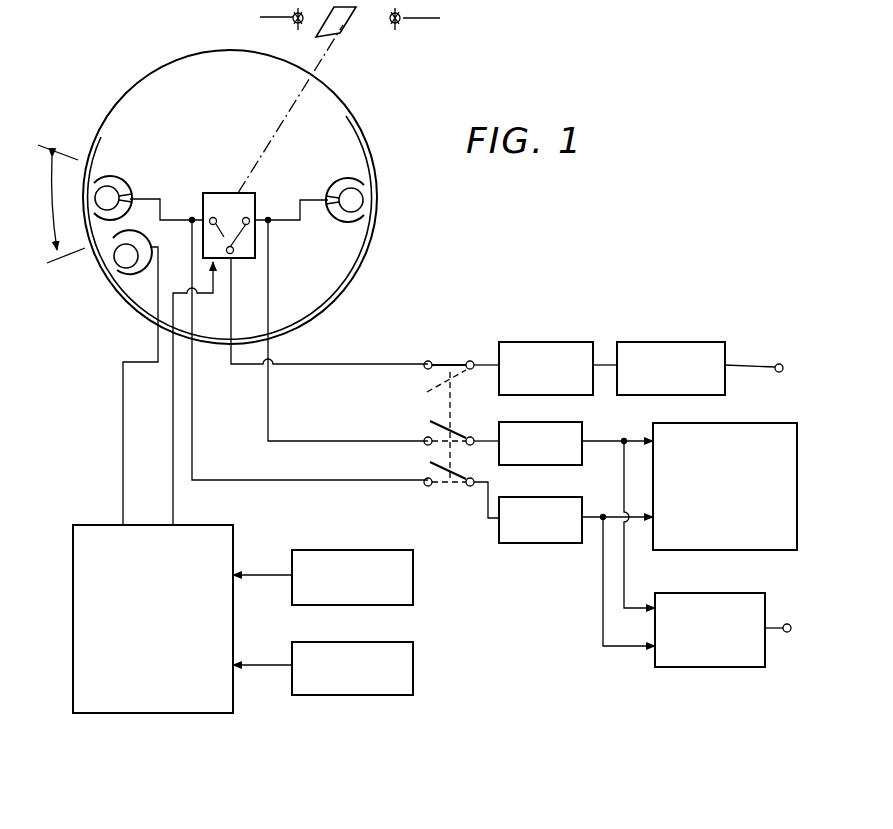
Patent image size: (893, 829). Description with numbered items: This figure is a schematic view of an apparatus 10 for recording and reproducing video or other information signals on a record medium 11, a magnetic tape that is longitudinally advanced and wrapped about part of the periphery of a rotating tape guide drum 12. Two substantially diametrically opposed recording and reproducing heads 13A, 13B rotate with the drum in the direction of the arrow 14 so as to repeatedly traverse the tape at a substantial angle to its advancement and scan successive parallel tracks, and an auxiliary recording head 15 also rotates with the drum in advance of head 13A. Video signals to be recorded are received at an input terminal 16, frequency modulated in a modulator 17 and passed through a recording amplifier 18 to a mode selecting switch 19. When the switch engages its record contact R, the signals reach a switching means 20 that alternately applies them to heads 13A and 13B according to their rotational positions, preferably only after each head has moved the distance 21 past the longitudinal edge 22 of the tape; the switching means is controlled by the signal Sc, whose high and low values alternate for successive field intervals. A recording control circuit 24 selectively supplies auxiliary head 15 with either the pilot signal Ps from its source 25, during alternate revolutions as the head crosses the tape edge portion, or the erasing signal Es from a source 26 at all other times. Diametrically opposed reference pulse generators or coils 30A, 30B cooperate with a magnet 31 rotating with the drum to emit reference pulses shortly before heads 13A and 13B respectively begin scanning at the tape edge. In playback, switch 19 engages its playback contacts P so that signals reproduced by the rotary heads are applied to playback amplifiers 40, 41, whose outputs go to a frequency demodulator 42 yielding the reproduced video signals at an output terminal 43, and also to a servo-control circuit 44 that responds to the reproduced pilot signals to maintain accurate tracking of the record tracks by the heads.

The apparatus 10 is at (380, 247).
The record medium 11 is at (337, 303).
The tape guide drum 12 is at (340, 117).
The recording and reproducing head 13A is at (118, 177).
The recording and reproducing head 13B is at (352, 178).
The arrow 14 is at (334, 252).
The auxiliary recording head 15 is at (127, 292).
The input terminal 16 is at (790, 352).
The modulator 17 is at (715, 342).
The recording amplifier 18 is at (560, 342).
The mode selecting switch 19 is at (456, 354).
The switching means 20 is at (250, 193).
The distance 21 is at (58, 204).
The longitudinal edge 22 is at (95, 135).
The recording control circuit 24 is at (73, 669).
The pilot signal source 25 is at (407, 550).
The erasing signal source 26 is at (406, 695).
The reference pulse generator 30A is at (297, 30).
The reference pulse generator 30B is at (398, 33).
The magnet 31 is at (340, 30).
The playback amplifier 40 is at (550, 545).
The playback amplifier 41 is at (548, 466).
The frequency demodulator 42 is at (725, 670).
The output terminal 43 is at (788, 633).
The servo-control circuit 44 is at (780, 551).
The record contact R is at (428, 361).
The playback contacts P is at (425, 478).
The flip-flop output Sc is at (173, 440).
The pilot signal Ps is at (265, 572).
The erasing signal Es is at (265, 662).